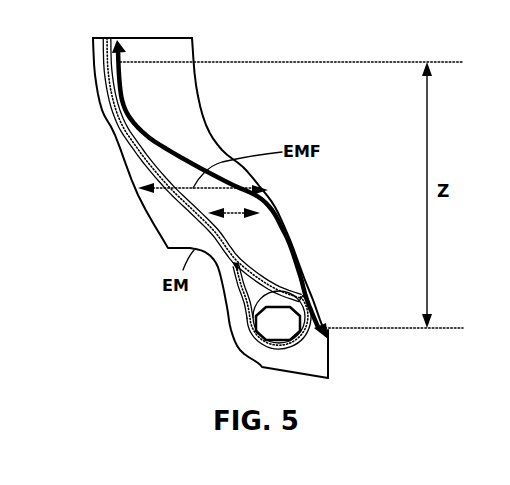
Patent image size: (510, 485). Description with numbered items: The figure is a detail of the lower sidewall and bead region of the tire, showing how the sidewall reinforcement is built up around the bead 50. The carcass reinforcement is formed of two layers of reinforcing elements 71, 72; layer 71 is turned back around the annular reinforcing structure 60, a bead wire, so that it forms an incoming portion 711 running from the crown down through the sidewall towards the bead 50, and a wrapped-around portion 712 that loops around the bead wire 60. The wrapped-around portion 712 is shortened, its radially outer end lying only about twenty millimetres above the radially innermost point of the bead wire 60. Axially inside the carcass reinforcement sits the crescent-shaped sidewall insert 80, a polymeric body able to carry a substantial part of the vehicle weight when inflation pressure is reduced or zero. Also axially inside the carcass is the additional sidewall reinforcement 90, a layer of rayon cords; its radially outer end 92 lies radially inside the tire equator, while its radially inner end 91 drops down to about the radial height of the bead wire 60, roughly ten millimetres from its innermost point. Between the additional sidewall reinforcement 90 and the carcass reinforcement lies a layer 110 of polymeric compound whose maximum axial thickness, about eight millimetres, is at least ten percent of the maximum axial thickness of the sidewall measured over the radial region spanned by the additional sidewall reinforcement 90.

The bead 50 is at (315, 353).
The annular reinforcing structure 60 is at (273, 328).
The layer of reinforcing elements 71 is at (114, 53).
The layer of reinforcing elements 72 is at (112, 118).
The sidewall insert 80 is at (170, 102).
The additional sidewall reinforcement 90 is at (282, 221).
The radially inner end of the additional sidewall reinforcement 91 is at (330, 333).
The radially outer end of the additional sidewall reinforcement 92 is at (124, 44).
The layer of polymeric compound 110 is at (277, 257).
The incoming portion 711 is at (138, 160).
The wrapped-around portion 712 is at (243, 318).